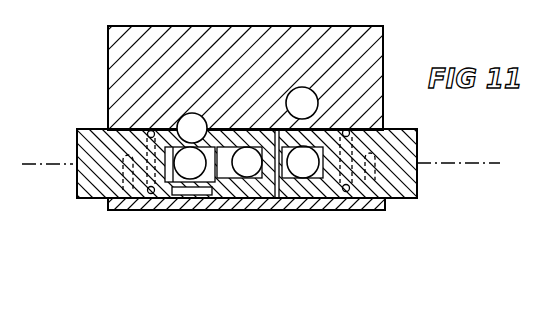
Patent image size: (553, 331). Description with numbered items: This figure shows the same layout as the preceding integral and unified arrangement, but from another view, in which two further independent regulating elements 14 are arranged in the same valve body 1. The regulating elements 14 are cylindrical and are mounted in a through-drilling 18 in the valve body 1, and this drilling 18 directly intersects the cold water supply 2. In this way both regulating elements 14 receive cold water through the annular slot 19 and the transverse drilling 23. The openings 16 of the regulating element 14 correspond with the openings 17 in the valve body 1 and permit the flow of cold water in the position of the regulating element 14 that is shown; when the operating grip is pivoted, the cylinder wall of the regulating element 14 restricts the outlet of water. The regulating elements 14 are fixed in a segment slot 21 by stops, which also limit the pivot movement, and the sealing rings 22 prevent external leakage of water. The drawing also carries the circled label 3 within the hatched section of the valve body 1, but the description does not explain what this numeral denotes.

The valve body 1 is at (368, 48).
The cold water supply 2 is at (192, 128).
The housing part 3 is at (302, 103).
The regulating element 14 is at (92, 160).
The opening 16 is at (248, 165).
The opening 17 is at (305, 165).
The through-drilling 18 is at (215, 212).
The annular slot 19 is at (175, 197).
The segment slot 21 is at (125, 183).
The sealing ring 22 is at (150, 194).
The transverse drilling 23 is at (190, 163).